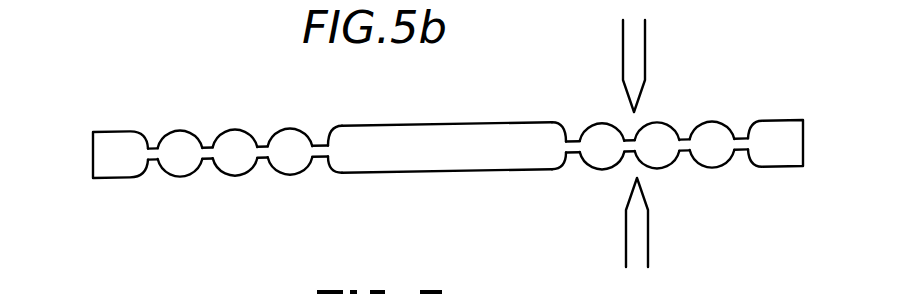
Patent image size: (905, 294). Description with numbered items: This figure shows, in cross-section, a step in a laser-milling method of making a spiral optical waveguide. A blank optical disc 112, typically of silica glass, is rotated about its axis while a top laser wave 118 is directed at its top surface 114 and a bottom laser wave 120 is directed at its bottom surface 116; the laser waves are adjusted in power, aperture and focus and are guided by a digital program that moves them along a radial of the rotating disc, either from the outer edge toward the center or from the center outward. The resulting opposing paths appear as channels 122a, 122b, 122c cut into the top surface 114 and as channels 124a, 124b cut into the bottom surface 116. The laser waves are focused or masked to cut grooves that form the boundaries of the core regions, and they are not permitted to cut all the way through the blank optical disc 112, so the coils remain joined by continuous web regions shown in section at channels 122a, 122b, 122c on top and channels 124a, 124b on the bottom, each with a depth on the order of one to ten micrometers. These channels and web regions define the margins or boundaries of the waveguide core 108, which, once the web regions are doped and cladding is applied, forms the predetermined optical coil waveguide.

The waveguide core 108 is at (175, 163).
The blank optical disc 112 is at (447, 153).
The top surface 114 is at (358, 128).
The bottom surface 116 is at (360, 173).
The top laser wave 118 is at (628, 112).
The bottom laser wave 120 is at (630, 185).
The channel 122a is at (156, 147).
The channel 122b is at (212, 145).
The channel 122c is at (262, 143).
The channel 124a is at (267, 167).
The channel 124b is at (322, 168).